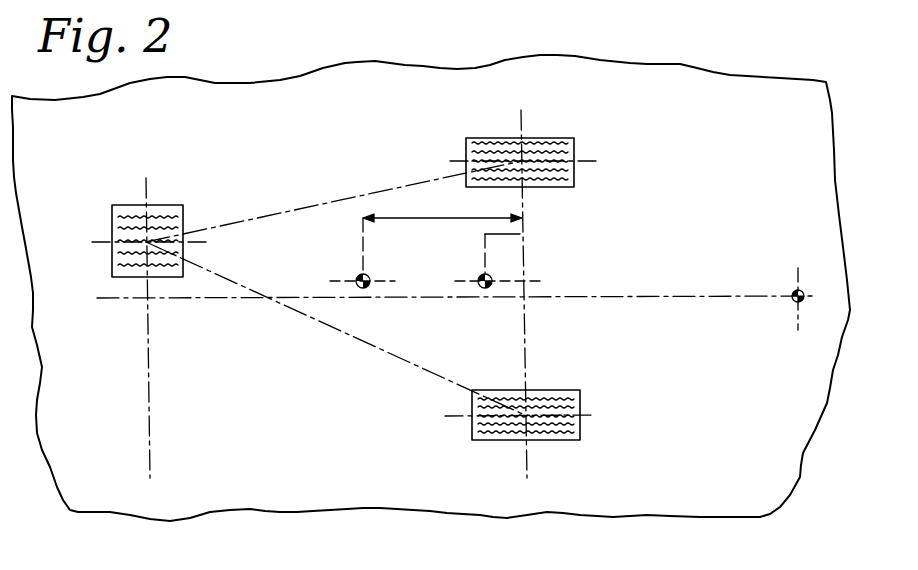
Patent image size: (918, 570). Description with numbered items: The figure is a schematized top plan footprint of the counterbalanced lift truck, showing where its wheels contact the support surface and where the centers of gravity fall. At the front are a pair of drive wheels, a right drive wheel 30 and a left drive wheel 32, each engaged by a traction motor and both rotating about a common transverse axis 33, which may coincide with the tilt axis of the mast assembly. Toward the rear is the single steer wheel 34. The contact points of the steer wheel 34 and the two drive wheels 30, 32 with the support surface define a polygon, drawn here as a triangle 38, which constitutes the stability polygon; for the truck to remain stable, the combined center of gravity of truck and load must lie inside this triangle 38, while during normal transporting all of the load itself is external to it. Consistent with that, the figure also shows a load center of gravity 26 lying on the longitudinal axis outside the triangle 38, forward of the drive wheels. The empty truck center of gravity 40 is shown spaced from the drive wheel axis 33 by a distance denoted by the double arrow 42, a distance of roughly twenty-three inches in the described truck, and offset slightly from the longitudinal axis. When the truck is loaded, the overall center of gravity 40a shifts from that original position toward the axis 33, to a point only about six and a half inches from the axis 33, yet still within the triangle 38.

The optical axis / rotation center 26 is at (796, 291).
The right drive wheel 30 is at (579, 427).
The left drive wheel 32 is at (575, 147).
The transverse axis 33 is at (524, 228).
The steer wheel 34 is at (128, 204).
The triangle 38 is at (337, 329).
The empty truck center of gravity 40 is at (360, 274).
The overall center of gravity of the loaded truck 40a is at (492, 279).
The double arrow 42 is at (435, 218).